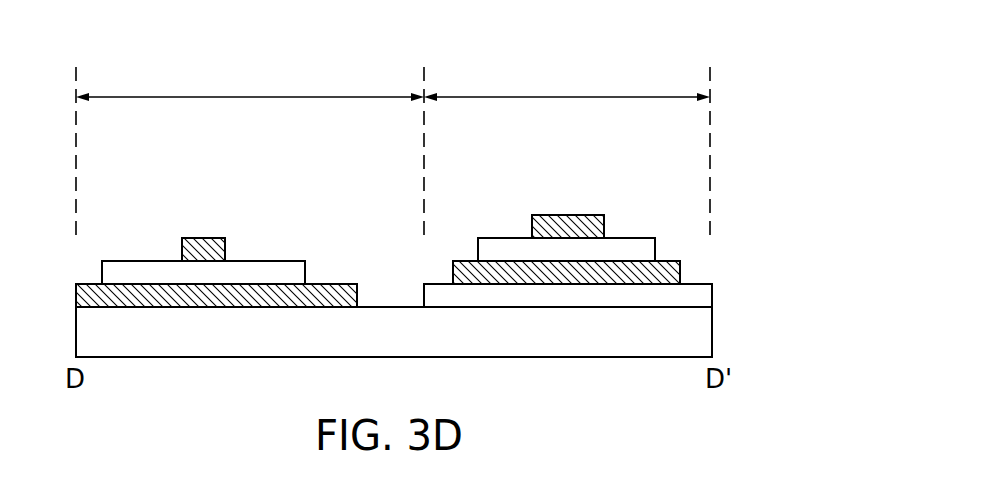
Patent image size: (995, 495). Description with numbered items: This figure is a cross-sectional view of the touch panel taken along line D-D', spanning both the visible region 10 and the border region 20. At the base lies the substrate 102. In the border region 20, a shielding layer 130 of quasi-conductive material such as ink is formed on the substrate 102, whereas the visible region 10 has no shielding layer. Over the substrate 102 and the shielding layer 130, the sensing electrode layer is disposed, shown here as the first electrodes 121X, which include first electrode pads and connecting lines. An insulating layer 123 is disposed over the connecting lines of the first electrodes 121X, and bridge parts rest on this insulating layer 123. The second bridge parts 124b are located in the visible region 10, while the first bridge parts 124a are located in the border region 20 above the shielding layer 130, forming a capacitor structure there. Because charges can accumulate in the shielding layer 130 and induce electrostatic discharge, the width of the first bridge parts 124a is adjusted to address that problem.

The visible region 10 is at (250, 95).
The border region 20 is at (565, 95).
The substrate 102 is at (697, 338).
The shielding layer 130 is at (697, 295).
The first electrodes 121X is at (337, 290).
The insulating layer 123 is at (277, 268).
The first bridge parts 124a is at (565, 232).
The second bridge parts 124b is at (205, 238).